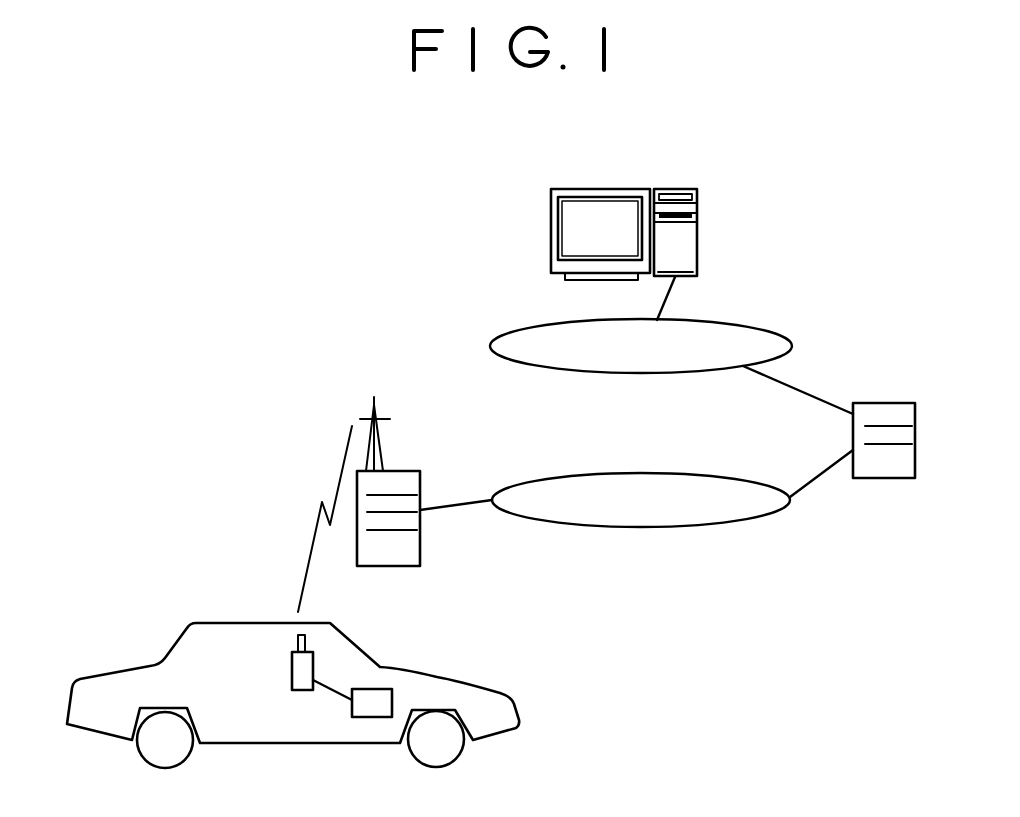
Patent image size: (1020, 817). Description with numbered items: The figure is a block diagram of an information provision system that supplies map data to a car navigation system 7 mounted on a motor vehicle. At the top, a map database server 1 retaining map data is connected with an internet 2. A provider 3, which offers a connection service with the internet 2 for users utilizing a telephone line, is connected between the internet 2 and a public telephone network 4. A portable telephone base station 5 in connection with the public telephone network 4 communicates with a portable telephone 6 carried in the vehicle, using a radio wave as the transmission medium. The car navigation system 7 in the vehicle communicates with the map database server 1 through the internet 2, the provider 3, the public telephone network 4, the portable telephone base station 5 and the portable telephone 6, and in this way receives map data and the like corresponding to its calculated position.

The map database server 1 is at (617, 189).
The internet 2 is at (510, 332).
The provider 3 is at (878, 403).
The public telephone network 4 is at (664, 524).
The portable telephone base station 5 is at (407, 471).
The portable telephone 6 is at (296, 666).
The car navigation system 7 is at (378, 698).